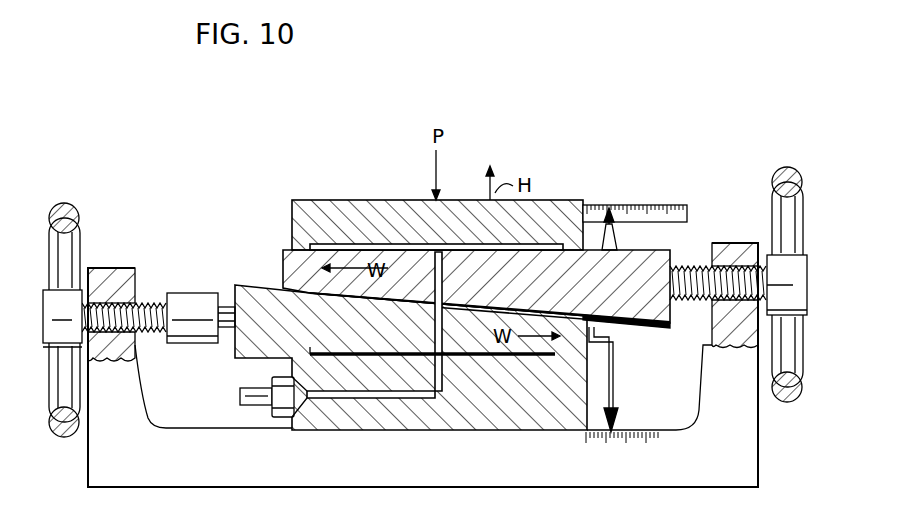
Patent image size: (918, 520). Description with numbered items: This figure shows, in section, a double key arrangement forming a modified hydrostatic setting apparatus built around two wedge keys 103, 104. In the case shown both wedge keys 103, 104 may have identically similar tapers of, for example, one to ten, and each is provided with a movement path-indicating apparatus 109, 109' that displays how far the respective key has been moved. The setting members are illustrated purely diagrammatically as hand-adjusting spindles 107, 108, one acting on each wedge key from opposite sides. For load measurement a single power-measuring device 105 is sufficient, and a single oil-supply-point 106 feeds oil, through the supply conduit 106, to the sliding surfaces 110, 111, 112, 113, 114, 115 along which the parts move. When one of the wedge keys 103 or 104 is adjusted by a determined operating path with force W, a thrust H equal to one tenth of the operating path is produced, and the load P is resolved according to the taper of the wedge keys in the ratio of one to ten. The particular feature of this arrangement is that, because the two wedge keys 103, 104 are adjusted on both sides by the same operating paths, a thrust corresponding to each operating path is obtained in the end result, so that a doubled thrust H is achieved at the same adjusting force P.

The wedge key 103 is at (253, 295).
The wedge key 104 is at (289, 255).
The power-measuring device 105 is at (190, 300).
The oil-supply-point 106 is at (240, 393).
The hand-adjusting spindle 107 is at (777, 178).
The hand-adjusting spindle 108 is at (66, 209).
The movement path-indicating apparatus 109 is at (635, 227).
The movement path-indicating apparatus 109' is at (637, 385).
The sliding surface 110 is at (394, 250).
The sliding surface 111 is at (349, 250).
The sliding surface 112 is at (578, 312).
The sliding surface 113 is at (590, 328).
The sliding surface 114 is at (338, 353).
The sliding surface 115 is at (362, 368).